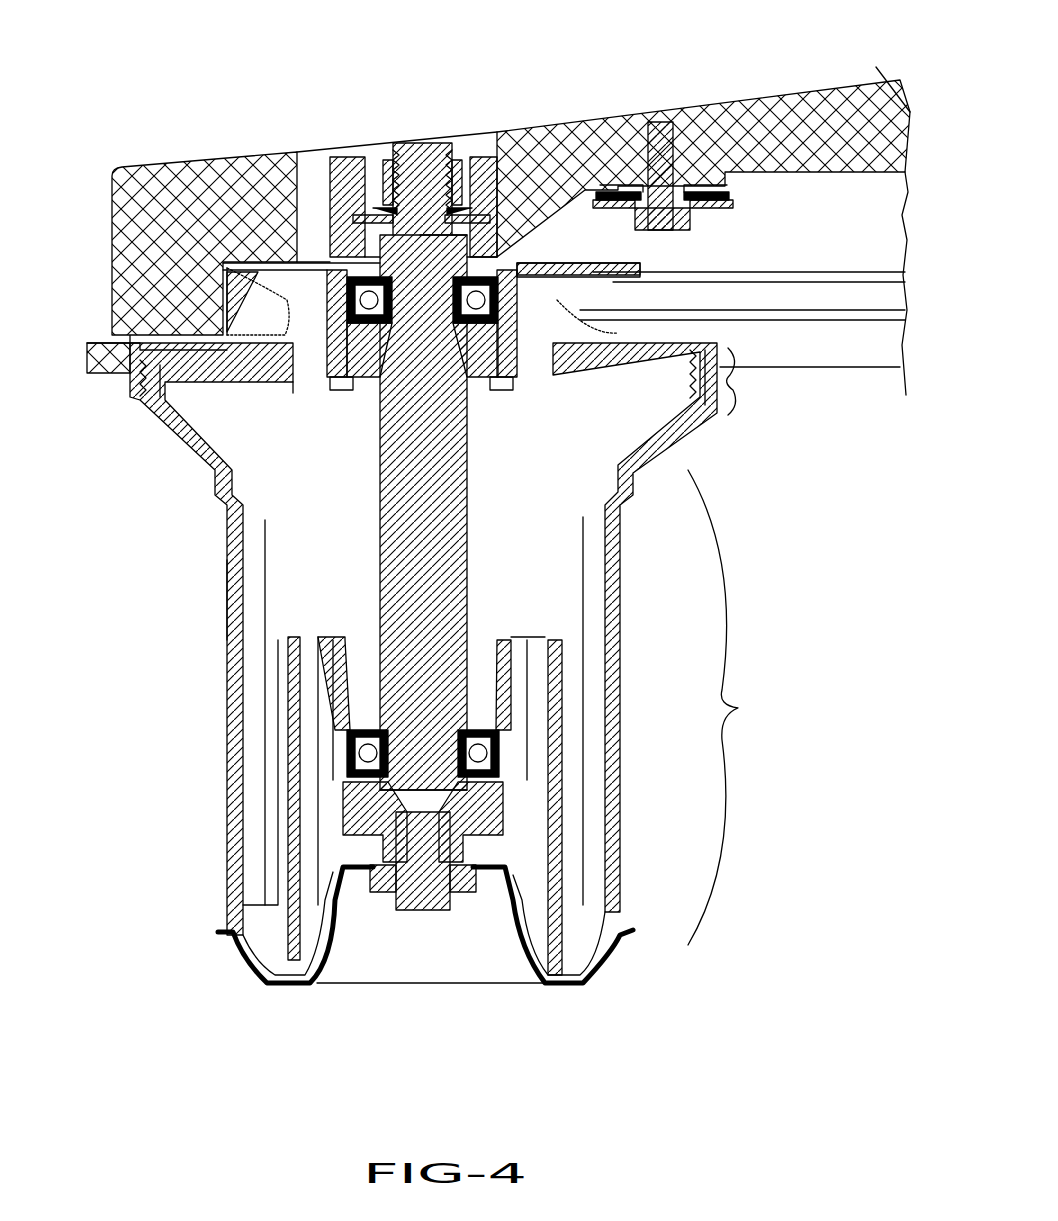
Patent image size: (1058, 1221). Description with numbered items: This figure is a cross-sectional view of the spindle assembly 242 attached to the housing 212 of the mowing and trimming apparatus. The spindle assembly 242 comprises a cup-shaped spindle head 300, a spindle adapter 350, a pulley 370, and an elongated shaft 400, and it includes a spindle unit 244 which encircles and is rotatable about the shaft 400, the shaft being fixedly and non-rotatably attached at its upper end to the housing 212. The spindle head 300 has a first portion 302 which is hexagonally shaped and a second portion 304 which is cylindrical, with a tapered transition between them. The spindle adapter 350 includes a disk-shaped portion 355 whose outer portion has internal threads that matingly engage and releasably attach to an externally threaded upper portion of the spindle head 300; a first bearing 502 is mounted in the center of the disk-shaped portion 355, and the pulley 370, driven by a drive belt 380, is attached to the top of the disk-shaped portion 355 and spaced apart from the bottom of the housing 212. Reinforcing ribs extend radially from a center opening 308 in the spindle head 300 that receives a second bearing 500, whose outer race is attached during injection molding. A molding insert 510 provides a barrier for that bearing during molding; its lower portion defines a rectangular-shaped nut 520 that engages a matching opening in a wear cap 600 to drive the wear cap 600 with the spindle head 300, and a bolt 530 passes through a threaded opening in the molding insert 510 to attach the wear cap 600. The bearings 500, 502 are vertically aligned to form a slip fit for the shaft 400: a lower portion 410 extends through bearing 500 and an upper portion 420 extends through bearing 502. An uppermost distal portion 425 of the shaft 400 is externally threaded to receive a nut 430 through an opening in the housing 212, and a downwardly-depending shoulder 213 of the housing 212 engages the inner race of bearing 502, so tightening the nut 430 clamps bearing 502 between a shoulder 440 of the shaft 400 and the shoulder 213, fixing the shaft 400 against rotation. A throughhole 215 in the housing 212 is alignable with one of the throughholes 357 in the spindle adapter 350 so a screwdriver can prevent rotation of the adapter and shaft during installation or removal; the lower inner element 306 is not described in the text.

The housing 212 is at (724, 96).
The downwardly-depending shoulder 213 is at (323, 423).
The throughhole 215 is at (300, 185).
The uppermost distal portion 425 is at (430, 160).
The nut 430 is at (430, 265).
The upper portion 420 is at (467, 270).
The pulley 370 is at (555, 286).
The spindle adapter 350 is at (705, 340).
The throughholes 357 is at (300, 380).
The disk-shaped portion 355 is at (622, 373).
The second portion 304 is at (758, 381).
The drive belt 380 is at (820, 300).
The first bearing 502 is at (365, 325).
The shoulder 440 is at (470, 323).
The elongated shaft 400 is at (455, 472).
The spindle unit 244 is at (160, 458).
The inner tube 306 is at (288, 640).
The second bearing 500 is at (368, 730).
The center opening 308 is at (483, 660).
The spindle assembly 242 is at (205, 598).
The spindle head 300 is at (235, 660).
The first portion 302 is at (739, 707).
The lower portion 410 is at (440, 750).
The rectangular-shaped nut 520 is at (383, 870).
The molding insert 510 is at (440, 905).
The bolt 530 is at (410, 915).
The wear cap 600 is at (615, 962).